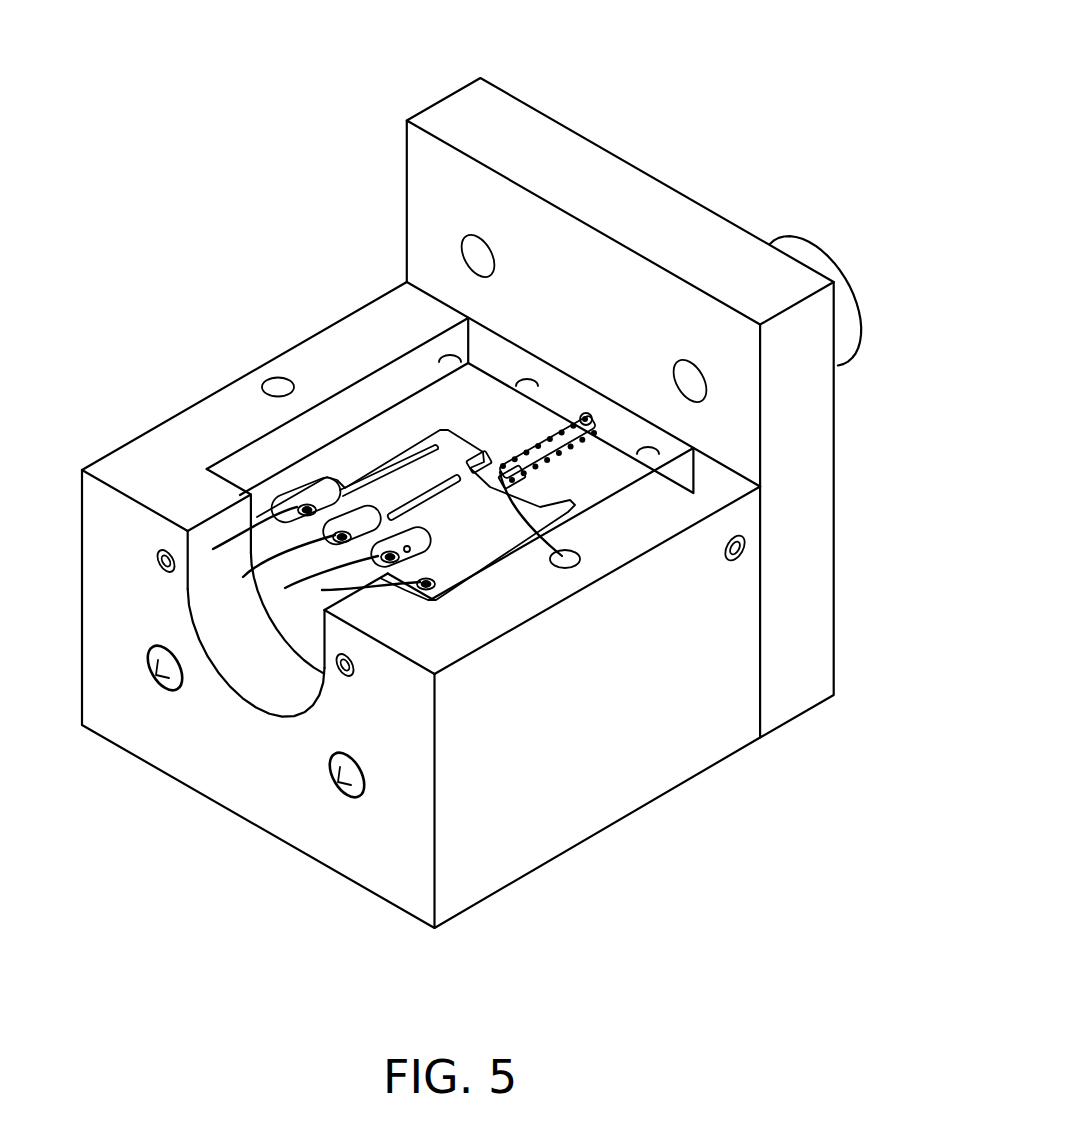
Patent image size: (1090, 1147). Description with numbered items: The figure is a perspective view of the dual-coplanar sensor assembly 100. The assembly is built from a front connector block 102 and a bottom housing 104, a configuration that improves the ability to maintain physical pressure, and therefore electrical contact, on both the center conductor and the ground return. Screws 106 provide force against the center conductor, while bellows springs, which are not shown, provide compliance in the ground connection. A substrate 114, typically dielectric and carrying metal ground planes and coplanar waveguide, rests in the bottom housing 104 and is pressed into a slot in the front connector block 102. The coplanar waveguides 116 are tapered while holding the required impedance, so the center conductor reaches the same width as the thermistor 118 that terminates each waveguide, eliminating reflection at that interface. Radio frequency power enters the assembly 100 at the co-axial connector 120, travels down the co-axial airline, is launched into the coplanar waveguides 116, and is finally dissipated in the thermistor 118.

The dual-coplanar sensor assembly 100 is at (707, 134).
The front connector block 102 is at (814, 490).
The bottom housing 104 is at (540, 792).
The screws 106 is at (158, 559).
The substrate 114 is at (418, 420).
The coplanar waveguide 116 is at (592, 426).
The thermistor 118 is at (582, 568).
The co-axial connector 120 is at (801, 242).